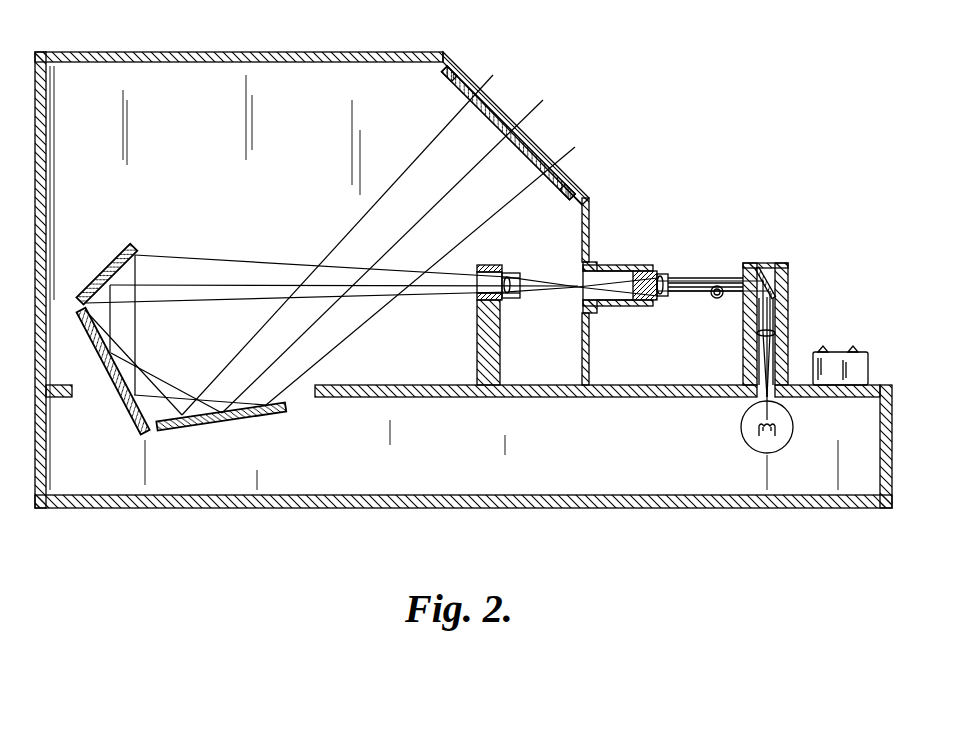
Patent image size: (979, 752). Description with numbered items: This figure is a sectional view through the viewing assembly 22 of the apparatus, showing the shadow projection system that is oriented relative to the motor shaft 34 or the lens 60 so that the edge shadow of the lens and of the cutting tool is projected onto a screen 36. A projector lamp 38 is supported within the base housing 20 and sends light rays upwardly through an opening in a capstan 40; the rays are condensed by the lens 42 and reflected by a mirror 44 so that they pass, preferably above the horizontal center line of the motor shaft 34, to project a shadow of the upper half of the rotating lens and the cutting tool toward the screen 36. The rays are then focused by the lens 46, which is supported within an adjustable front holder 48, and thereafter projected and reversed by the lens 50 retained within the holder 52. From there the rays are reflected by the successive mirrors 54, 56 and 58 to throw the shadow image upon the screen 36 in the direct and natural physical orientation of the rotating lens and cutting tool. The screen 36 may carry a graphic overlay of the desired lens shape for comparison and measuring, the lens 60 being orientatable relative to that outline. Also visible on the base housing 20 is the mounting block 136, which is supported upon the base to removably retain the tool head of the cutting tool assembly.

The base housing 20 is at (918, 377).
The viewing assembly 22 is at (626, 182).
The motor shaft 34 is at (718, 282).
The screen 36 is at (474, 83).
The projector lamp 38 is at (793, 425).
The capstan 40 is at (781, 264).
The lens 42 is at (756, 333).
The mirror 44 is at (770, 263).
The lens 46 is at (662, 272).
The adjustable front holder 48 is at (623, 263).
The lens 50 is at (509, 273).
The holder 52 is at (502, 357).
The mirror 54 is at (122, 256).
The mirror 56 is at (120, 396).
The mirror 58 is at (276, 425).
The lens 60 is at (711, 298).
The mounting block 136 is at (868, 366).